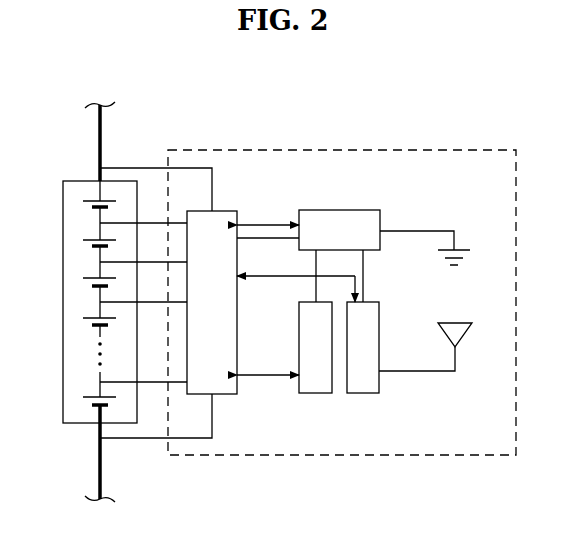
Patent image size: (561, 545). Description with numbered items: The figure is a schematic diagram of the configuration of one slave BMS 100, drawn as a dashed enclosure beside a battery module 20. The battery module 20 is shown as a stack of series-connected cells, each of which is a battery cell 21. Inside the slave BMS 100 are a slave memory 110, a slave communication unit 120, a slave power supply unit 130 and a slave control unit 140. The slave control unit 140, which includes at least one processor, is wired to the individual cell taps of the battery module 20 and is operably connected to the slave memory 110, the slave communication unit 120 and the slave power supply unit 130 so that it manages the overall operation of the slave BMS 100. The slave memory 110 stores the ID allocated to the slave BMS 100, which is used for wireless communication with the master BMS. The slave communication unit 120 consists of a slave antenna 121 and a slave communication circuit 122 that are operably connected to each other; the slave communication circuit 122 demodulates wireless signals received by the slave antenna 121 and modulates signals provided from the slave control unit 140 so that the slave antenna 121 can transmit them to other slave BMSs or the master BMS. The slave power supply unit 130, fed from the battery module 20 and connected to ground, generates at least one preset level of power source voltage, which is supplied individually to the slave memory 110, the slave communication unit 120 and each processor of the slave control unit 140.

The slave BMS 100 is at (447, 150).
The battery module 20 is at (63, 225).
The battery cell 21 is at (94, 250).
The slave control unit 140 is at (237, 322).
The slave power supply unit 130 is at (372, 250).
The slave memory 110 is at (302, 393).
The slave communication unit 120 is at (425, 367).
The slave antenna 121 is at (452, 321).
The slave communication circuit 122 is at (372, 393).